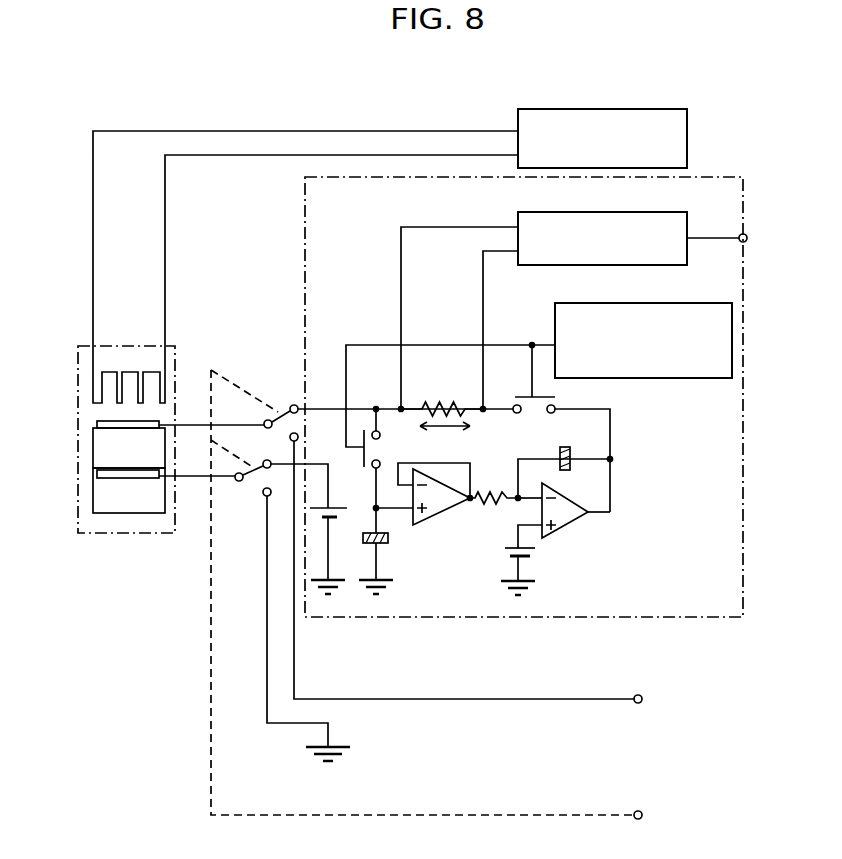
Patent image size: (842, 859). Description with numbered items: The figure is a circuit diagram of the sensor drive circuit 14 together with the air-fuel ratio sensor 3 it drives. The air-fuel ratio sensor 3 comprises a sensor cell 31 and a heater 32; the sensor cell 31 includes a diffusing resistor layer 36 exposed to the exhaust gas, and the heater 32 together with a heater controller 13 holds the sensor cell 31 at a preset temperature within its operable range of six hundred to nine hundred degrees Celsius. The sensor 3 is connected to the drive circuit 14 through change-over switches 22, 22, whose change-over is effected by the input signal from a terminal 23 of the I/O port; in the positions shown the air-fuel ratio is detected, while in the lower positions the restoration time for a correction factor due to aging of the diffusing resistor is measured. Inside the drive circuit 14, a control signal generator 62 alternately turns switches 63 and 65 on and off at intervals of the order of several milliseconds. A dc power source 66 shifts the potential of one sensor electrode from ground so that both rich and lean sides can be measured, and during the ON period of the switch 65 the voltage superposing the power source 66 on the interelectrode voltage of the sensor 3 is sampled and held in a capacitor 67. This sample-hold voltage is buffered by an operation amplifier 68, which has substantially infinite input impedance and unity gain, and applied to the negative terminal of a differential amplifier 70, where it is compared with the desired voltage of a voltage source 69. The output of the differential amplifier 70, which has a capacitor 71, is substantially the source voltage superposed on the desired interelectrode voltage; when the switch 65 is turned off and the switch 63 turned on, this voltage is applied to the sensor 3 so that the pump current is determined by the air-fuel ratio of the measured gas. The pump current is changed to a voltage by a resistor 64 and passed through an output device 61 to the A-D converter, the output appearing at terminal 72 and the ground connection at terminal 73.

The air-fuel ratio sensor 3 is at (118, 534).
The sensor cell 31 is at (92, 460).
The heater 32 is at (93, 392).
The diffusing resistor layer 36 is at (100, 498).
The heater controller 13 is at (687, 136).
The sensor drive circuit 14 is at (305, 208).
The switch 22 is at (290, 405).
The terminal 23 is at (638, 811).
The output device 61 is at (675, 212).
The control signal generator 62 is at (660, 303).
The switch 63 is at (553, 394).
The resistor 64 is at (441, 402).
The switch 65 is at (362, 455).
The dc power source 66 is at (345, 512).
The capacitor 67 is at (390, 540).
The operation amplifier 68 is at (447, 507).
The voltage source 69 is at (505, 550).
The differential amplifier 70 is at (568, 531).
The capacitor 71 is at (560, 452).
The output terminal 72 is at (765, 253).
The ground terminal 73 is at (637, 695).